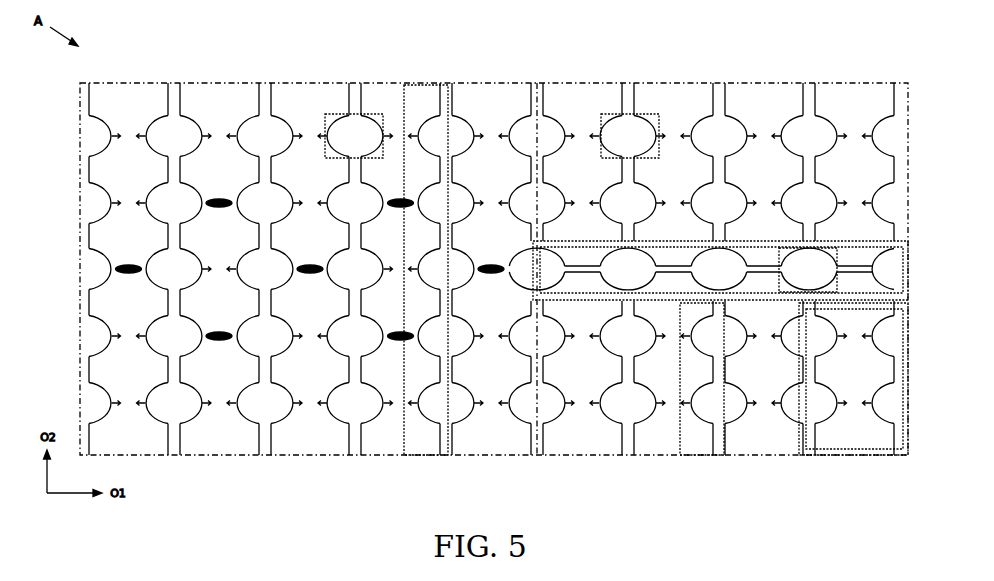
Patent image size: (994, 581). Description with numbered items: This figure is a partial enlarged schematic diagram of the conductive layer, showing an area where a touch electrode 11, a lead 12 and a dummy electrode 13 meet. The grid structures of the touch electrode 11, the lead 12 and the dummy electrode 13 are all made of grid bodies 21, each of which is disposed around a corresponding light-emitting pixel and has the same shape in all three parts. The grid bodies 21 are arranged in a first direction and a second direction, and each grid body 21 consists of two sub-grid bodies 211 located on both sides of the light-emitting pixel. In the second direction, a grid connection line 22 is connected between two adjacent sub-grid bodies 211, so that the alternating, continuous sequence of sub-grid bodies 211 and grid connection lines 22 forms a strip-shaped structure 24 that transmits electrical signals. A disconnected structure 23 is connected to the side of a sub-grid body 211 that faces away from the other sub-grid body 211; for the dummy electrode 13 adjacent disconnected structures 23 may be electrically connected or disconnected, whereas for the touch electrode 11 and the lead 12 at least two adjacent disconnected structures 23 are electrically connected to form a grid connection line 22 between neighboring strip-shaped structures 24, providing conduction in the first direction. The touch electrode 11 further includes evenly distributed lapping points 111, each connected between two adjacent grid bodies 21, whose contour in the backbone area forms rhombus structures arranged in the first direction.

The touch electrode 11 is at (80, 185).
The lapping point 111 is at (118, 268).
The lead 12 is at (905, 407).
The dummy electrode 13 is at (908, 152).
The grid body 21 is at (650, 113).
The sub-grid body 211 is at (150, 122).
The grid connection line 22 is at (303, 140).
The disconnected structure 23 is at (234, 138).
The strip-shaped structure 24 is at (431, 85).